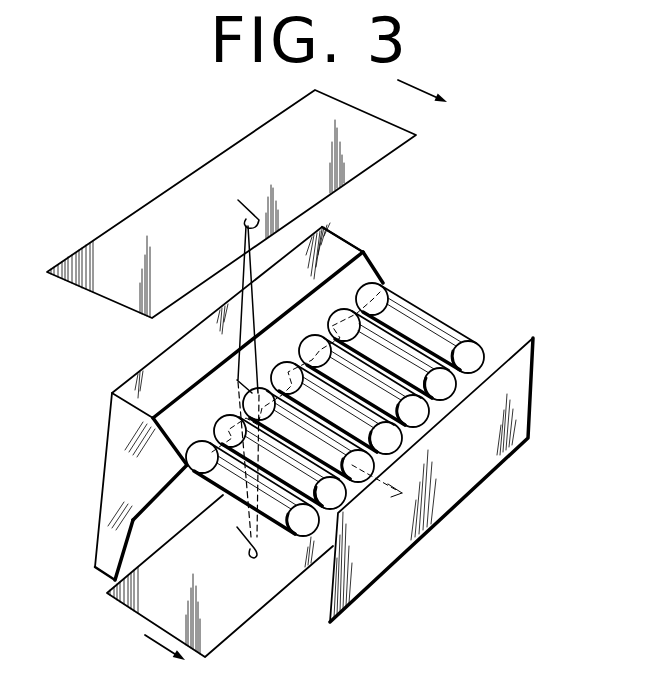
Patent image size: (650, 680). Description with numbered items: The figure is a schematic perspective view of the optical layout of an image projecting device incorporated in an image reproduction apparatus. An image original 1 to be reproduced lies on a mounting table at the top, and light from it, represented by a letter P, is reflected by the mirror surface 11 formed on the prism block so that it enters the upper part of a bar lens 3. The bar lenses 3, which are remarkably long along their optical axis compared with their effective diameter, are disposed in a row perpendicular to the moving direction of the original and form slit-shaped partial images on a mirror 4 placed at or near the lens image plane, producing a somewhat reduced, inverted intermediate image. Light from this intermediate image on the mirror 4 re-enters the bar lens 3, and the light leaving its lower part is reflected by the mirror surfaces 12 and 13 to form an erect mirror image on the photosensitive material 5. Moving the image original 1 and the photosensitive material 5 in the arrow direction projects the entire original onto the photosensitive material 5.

The image original 1 is at (355, 118).
The bar lens 3 is at (440, 327).
The mirror 4 is at (518, 387).
The photosensitive material 5 is at (232, 608).
The mirror surface 11 is at (362, 280).
The mirror surface 12 is at (163, 484).
The mirror surface 13 is at (133, 553).